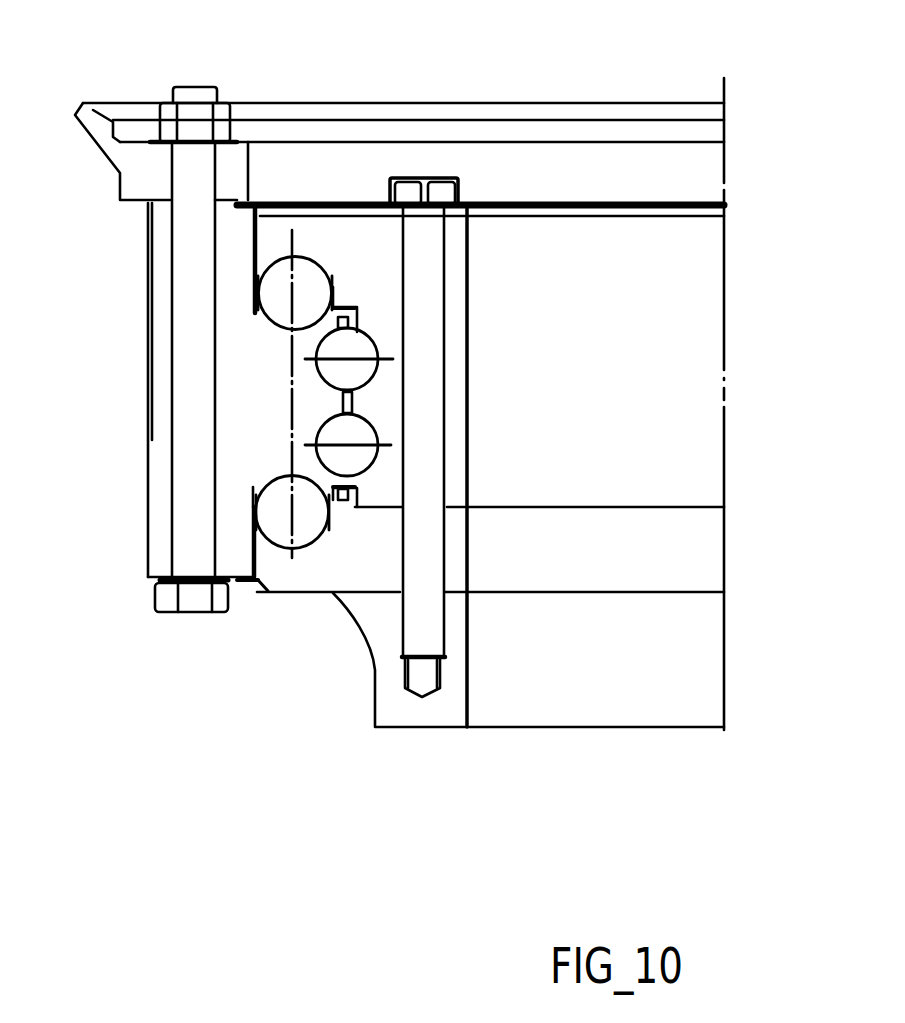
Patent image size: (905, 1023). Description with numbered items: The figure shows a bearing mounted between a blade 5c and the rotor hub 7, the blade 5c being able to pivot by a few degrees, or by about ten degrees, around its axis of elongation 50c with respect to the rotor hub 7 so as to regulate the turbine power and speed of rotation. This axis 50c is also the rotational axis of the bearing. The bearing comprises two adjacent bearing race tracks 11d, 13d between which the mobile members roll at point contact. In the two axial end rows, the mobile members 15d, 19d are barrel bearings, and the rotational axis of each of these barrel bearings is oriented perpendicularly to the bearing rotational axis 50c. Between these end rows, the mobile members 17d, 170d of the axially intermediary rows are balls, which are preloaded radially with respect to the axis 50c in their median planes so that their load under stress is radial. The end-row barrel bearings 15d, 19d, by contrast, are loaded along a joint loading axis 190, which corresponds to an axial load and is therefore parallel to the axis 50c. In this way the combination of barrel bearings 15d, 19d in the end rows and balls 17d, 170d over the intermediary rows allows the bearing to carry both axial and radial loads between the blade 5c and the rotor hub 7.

The rotor hub 7 is at (474, 121).
The bearing race track 11d is at (150, 497).
The bearing race track 13d is at (476, 492).
The mobile member of end row 15d is at (303, 250).
The ball of intermediary row 17d is at (378, 348).
The ball of intermediary row 170d is at (375, 433).
The joint loading axis 190 is at (312, 538).
The mobile member of end row 19d is at (318, 548).
The blade 5c is at (420, 713).
The rotational axis 50c is at (725, 457).